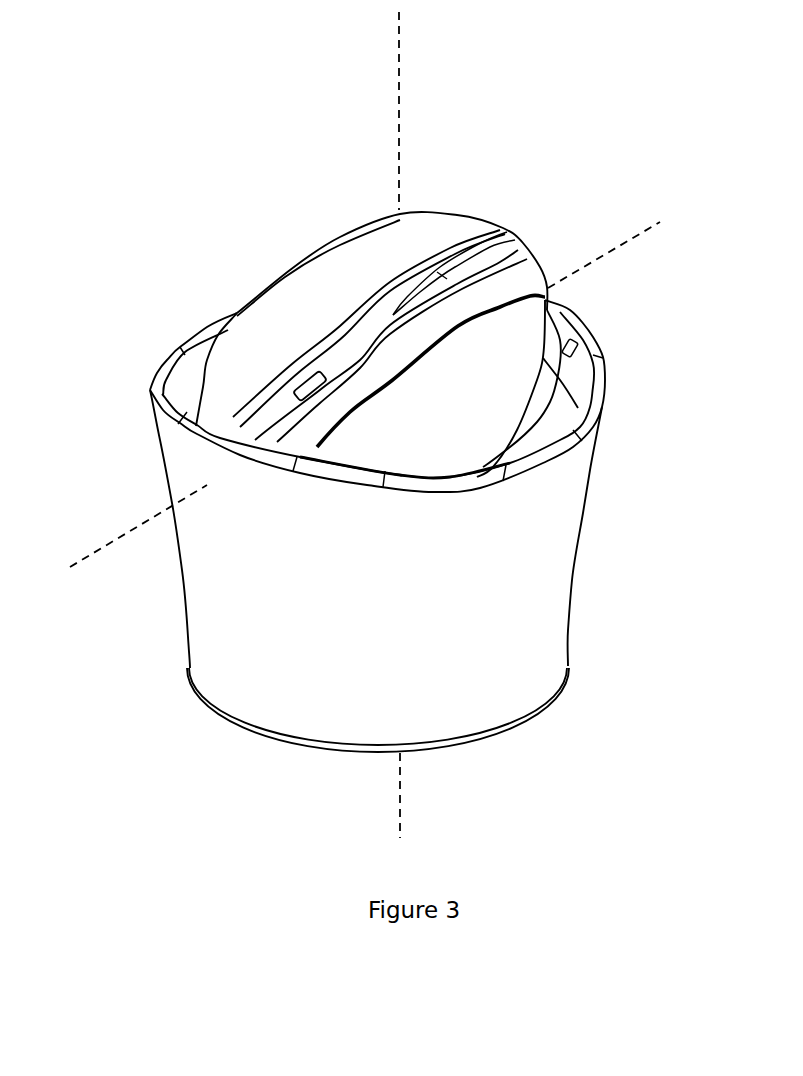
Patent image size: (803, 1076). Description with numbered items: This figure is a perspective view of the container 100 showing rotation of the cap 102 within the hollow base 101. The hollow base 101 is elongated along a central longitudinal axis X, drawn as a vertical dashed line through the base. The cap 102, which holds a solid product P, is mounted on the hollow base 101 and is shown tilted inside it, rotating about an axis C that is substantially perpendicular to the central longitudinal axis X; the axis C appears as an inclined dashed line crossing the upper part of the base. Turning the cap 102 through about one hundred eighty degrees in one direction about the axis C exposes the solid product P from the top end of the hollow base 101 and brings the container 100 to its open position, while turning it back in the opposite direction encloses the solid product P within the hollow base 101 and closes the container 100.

The container 100 is at (188, 90).
The hollow base 101 is at (552, 636).
The cap 102 is at (527, 243).
The solid product P is at (518, 353).
The central longitudinal axis X is at (398, 88).
The axis C is at (113, 540).